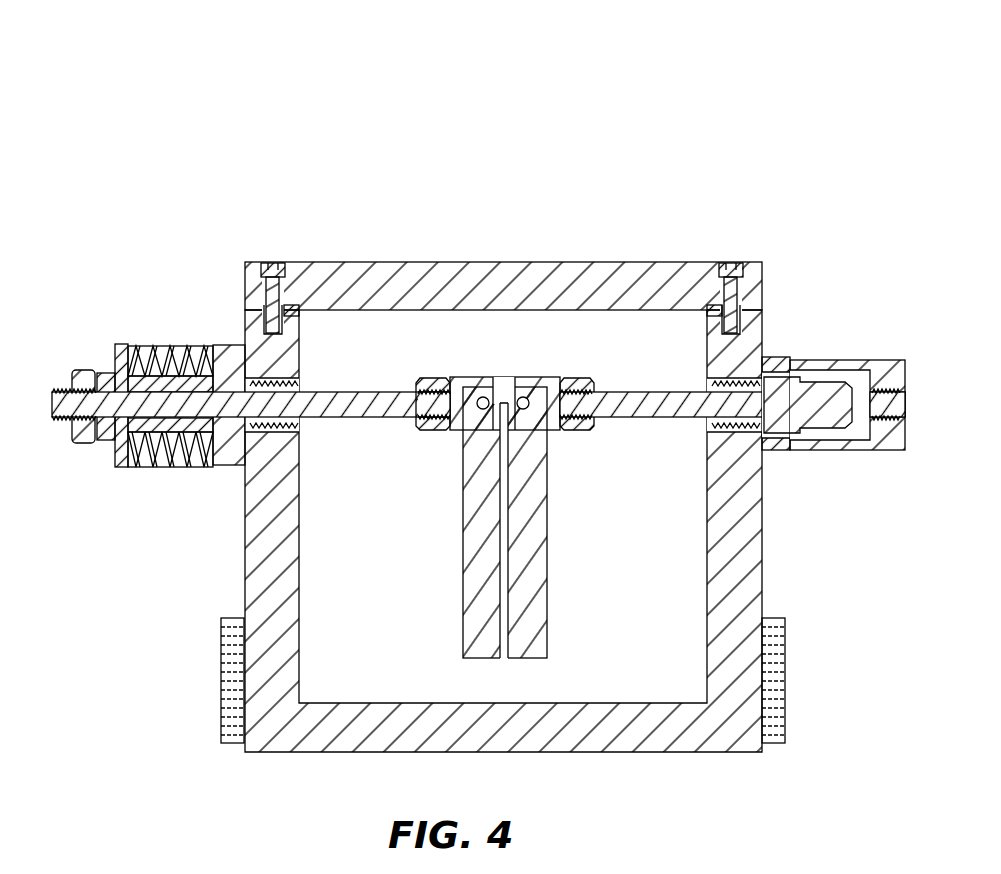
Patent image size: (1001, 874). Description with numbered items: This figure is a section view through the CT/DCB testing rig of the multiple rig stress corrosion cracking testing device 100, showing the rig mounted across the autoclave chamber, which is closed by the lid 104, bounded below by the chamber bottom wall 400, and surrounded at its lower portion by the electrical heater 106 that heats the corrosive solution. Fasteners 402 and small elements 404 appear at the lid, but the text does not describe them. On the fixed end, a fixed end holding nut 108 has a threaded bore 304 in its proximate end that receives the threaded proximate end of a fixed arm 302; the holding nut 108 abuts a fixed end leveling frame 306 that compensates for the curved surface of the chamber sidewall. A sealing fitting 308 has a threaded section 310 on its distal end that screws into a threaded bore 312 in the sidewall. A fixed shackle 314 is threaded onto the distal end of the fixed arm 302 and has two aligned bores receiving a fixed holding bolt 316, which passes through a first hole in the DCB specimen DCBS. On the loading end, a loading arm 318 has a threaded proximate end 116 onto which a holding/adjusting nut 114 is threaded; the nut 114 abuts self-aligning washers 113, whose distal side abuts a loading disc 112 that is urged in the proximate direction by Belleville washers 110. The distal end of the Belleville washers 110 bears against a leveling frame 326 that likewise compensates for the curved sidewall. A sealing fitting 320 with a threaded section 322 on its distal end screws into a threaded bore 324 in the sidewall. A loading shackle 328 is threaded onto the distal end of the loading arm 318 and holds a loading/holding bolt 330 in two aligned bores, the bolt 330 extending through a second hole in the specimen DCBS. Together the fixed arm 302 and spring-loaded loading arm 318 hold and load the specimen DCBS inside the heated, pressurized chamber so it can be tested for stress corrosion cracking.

The multiple rig stress corrosion cracking testing device 100 is at (160, 88).
The lid 104 is at (548, 262).
The electrical heater 106 is at (786, 650).
The fixed end holding nut 108 is at (882, 450).
The Belleville washers 110 is at (152, 346).
The loading disc 112 is at (122, 344).
The self-aligning washers 113 is at (105, 373).
The holding/adjusting nut 114 is at (80, 370).
The threaded proximate end 116 is at (52, 418).
The fixed arm 302 is at (645, 418).
The threaded bore 304 is at (897, 412).
The fixed end leveling frame 306 is at (770, 357).
The sealing fitting 308 is at (818, 383).
The threaded section 310 is at (740, 430).
The threaded bore 312 is at (712, 386).
The fixed shackle 314 is at (565, 377).
The fixed holding bolt 316 is at (523, 397).
The loading arm 318 is at (345, 418).
The sealing fitting 320 is at (180, 467).
The threaded section 322 is at (300, 378).
The threaded bore 324 is at (283, 427).
The leveling frame 326 is at (230, 345).
The loading shackle 328 is at (433, 432).
The loading/holding bolt 330 is at (483, 397).
The chamber bottom wall 400 is at (592, 752).
The screw 402 is at (266, 294).
The set screw 404 is at (296, 313).
The DCB specimen DCBS is at (535, 605).